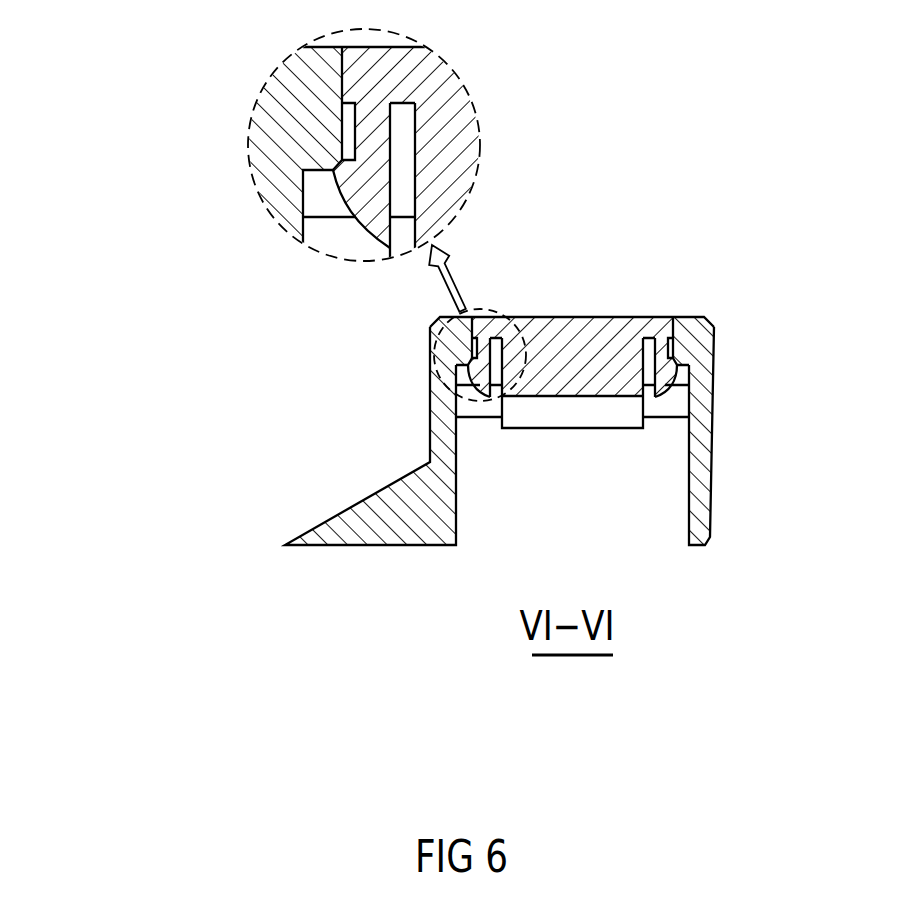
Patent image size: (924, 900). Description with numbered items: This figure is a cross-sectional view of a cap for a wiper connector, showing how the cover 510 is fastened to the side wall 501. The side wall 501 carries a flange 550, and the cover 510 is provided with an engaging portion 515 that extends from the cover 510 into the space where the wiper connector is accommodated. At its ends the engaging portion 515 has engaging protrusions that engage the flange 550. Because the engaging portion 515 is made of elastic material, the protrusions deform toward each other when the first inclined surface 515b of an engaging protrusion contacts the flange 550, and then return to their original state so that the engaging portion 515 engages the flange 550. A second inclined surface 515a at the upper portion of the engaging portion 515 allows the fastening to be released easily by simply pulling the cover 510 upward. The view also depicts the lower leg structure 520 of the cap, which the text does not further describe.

The side wall 501 is at (438, 390).
The cover 510 is at (580, 323).
The engaging portion 515 is at (148, 222).
The second inclined surface 515a is at (337, 170).
The first inclined surface 515b is at (347, 207).
The side leg 520 is at (347, 515).
The flange 550 is at (342, 132).